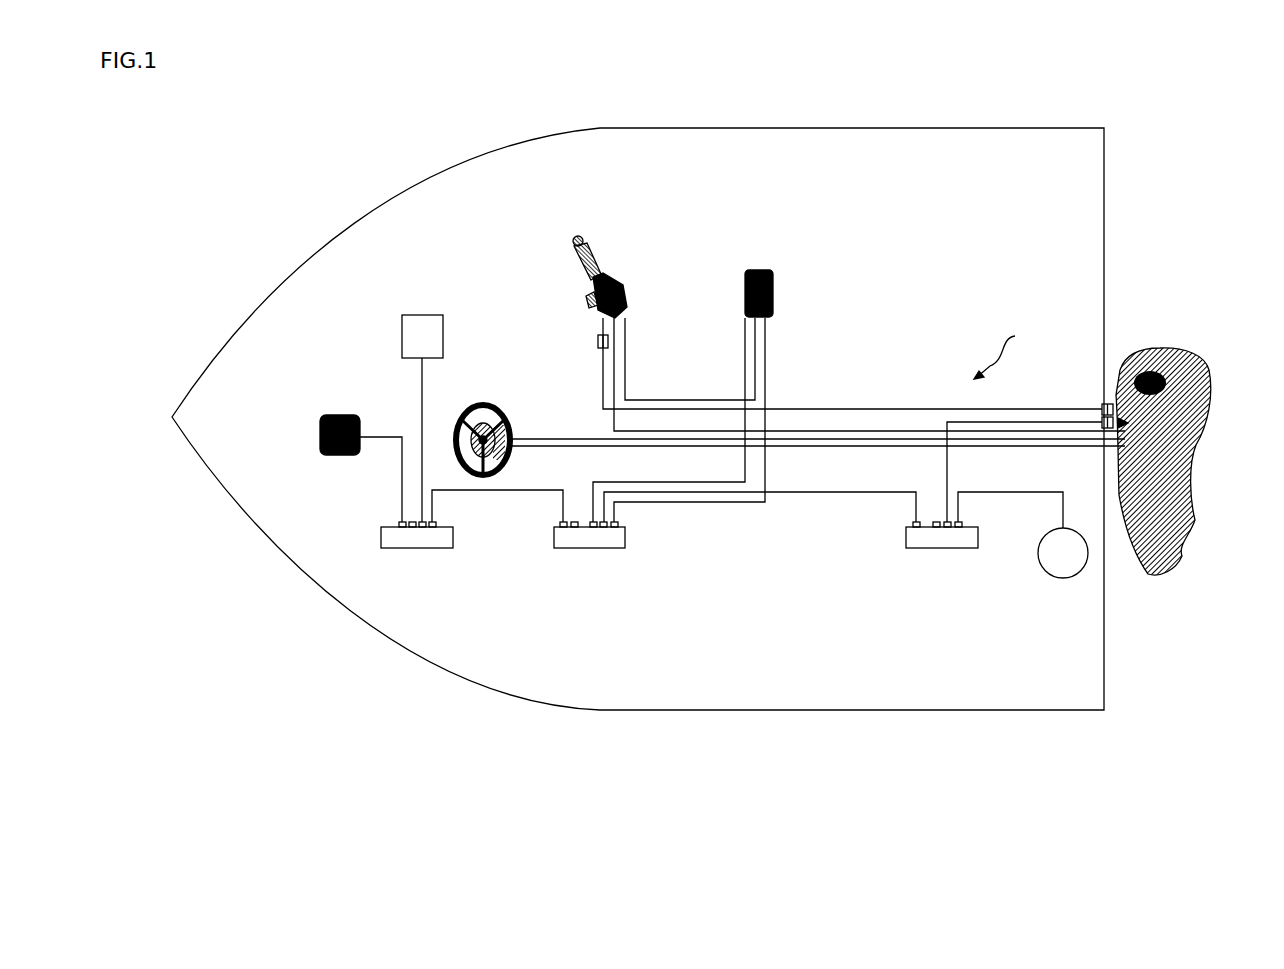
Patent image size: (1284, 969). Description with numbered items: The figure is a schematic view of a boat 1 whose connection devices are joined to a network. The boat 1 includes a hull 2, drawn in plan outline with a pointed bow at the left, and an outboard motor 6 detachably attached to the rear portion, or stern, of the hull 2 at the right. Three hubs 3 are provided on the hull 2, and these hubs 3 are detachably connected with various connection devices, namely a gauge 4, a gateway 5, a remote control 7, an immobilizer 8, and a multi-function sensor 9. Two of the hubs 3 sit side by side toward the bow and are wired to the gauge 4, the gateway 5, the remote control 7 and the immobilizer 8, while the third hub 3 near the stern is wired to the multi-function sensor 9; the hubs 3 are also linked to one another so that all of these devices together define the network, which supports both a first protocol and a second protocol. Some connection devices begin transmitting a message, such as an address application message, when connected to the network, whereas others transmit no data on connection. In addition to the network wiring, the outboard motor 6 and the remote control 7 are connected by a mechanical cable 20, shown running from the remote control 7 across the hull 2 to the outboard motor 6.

The boat 1 is at (1175, 152).
The hull 2 is at (543, 696).
The hub 3 is at (587, 548).
The gauge 4 is at (334, 417).
The gateway 5 is at (432, 313).
The outboard motor 6 is at (1212, 425).
The remote control 7 is at (618, 269).
The immobilizer 8 is at (774, 283).
The multi-function sensor 9 is at (1038, 574).
The mechanical cable 20 is at (828, 430).